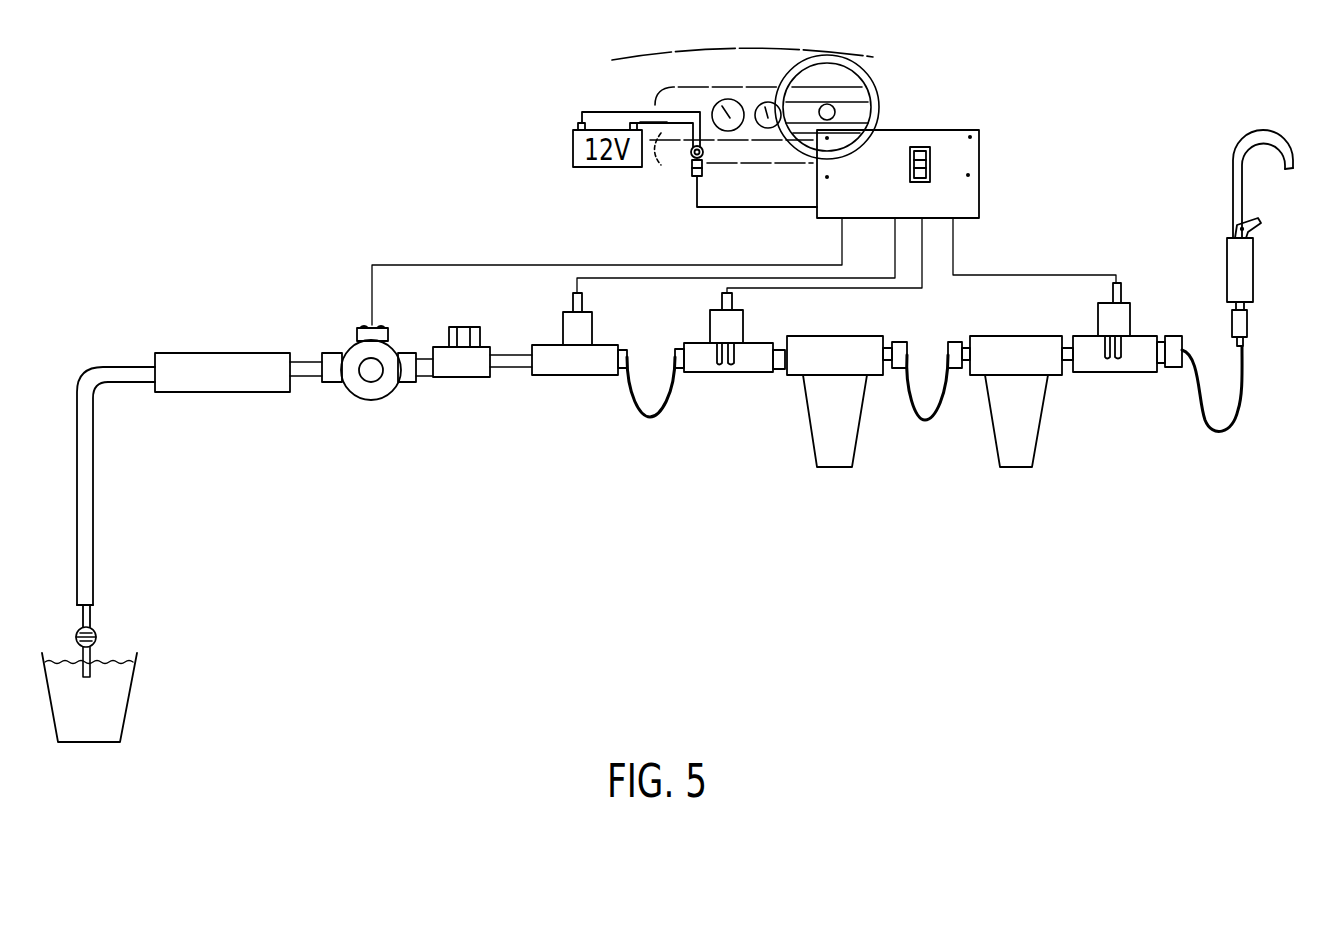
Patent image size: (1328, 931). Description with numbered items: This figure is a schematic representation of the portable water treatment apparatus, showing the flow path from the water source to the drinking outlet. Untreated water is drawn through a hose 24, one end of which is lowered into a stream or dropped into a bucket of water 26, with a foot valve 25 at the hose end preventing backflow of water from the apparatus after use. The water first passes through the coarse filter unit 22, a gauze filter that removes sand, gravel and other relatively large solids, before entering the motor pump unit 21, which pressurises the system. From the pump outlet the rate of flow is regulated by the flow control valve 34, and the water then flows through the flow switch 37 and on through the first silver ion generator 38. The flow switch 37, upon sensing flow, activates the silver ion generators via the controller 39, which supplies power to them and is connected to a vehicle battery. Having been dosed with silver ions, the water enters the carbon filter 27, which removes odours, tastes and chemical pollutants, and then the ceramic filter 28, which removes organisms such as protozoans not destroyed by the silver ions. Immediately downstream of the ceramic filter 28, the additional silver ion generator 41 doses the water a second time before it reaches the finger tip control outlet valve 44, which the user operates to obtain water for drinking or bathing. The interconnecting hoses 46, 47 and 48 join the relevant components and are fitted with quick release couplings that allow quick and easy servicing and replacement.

The motor pump unit 21 is at (355, 388).
The coarse filter unit 22 is at (186, 360).
The hose 24 is at (90, 545).
The foot valve 25 is at (100, 636).
The bucket of water 26 is at (108, 723).
The carbon filter 27 is at (820, 413).
The ceramic filter 28 is at (1003, 417).
The flow control valve 34 is at (447, 380).
The flow switch 37 is at (557, 368).
The silver ion generator 38 is at (700, 368).
The controller 39 is at (900, 137).
The additional silver ion generator 41 is at (1128, 367).
The finger tip control outlet valve 44 is at (1243, 266).
The interconnecting hose 46 is at (641, 400).
The interconnecting hose 47 is at (917, 397).
The interconnecting hose 48 is at (1198, 407).